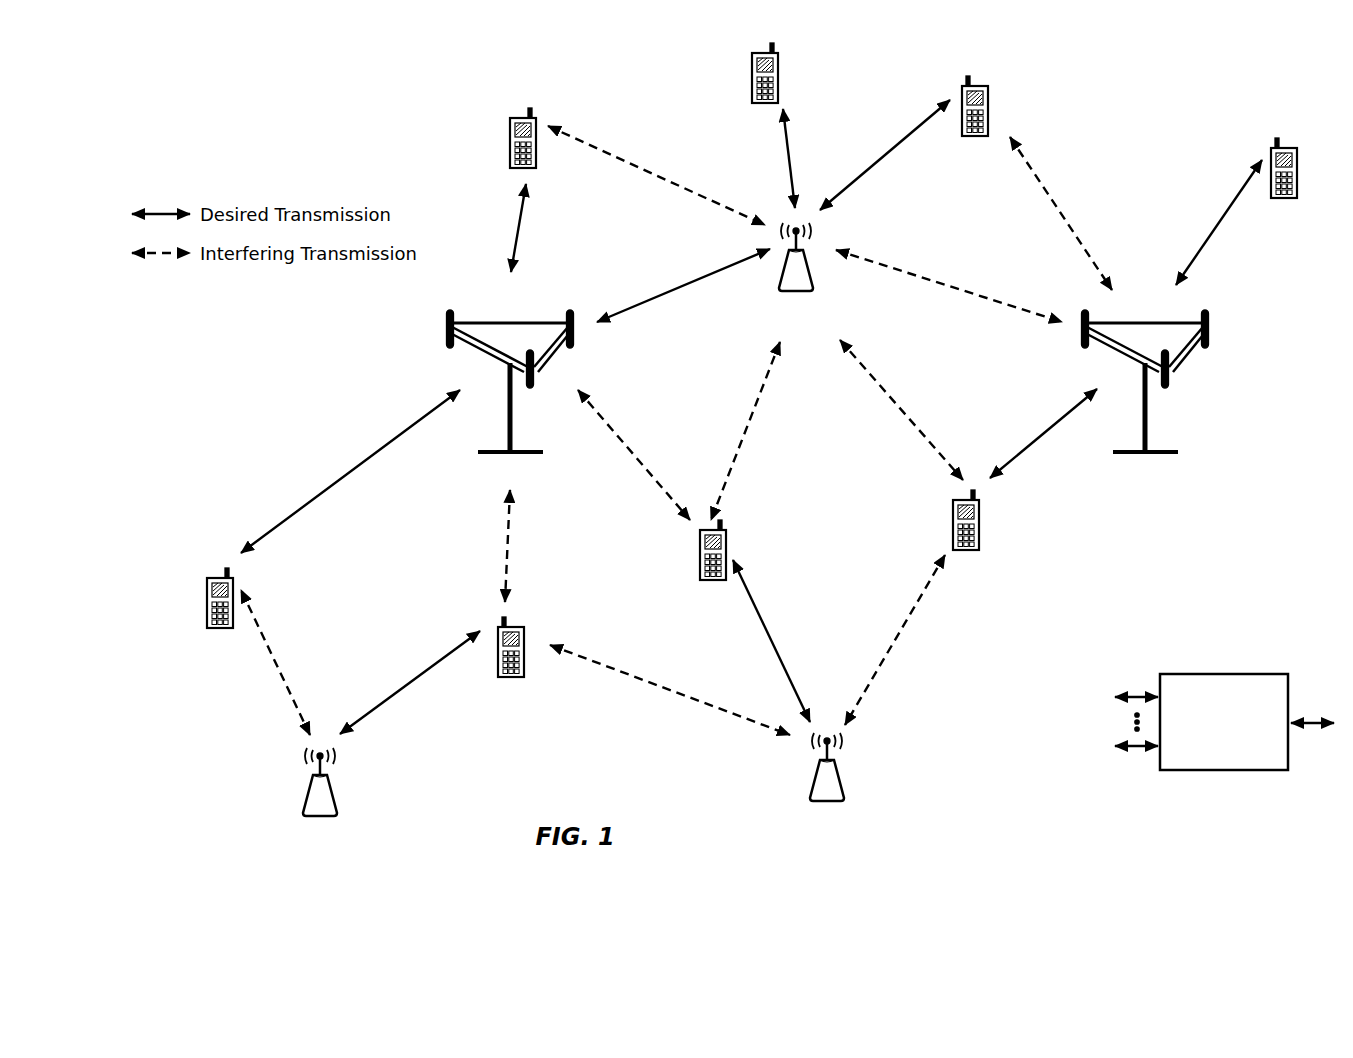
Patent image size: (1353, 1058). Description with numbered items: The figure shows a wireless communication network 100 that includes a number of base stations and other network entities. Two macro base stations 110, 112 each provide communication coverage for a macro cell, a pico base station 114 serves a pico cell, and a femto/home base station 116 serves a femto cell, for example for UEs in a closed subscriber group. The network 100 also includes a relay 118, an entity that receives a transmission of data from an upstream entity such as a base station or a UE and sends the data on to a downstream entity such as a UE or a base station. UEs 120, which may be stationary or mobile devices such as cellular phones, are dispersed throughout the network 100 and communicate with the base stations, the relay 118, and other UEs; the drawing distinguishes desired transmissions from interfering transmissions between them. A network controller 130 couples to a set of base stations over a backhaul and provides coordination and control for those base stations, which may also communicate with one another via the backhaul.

The wireless communication network 100 is at (374, 126).
The macro base station 110 is at (505, 320).
The macro base station 112 is at (1140, 320).
The pico base station 114 is at (306, 798).
The femto/home base station 116 is at (813, 780).
The relay 118 is at (811, 272).
The UEs 120 is at (508, 130).
The network controller 130 is at (1220, 673).